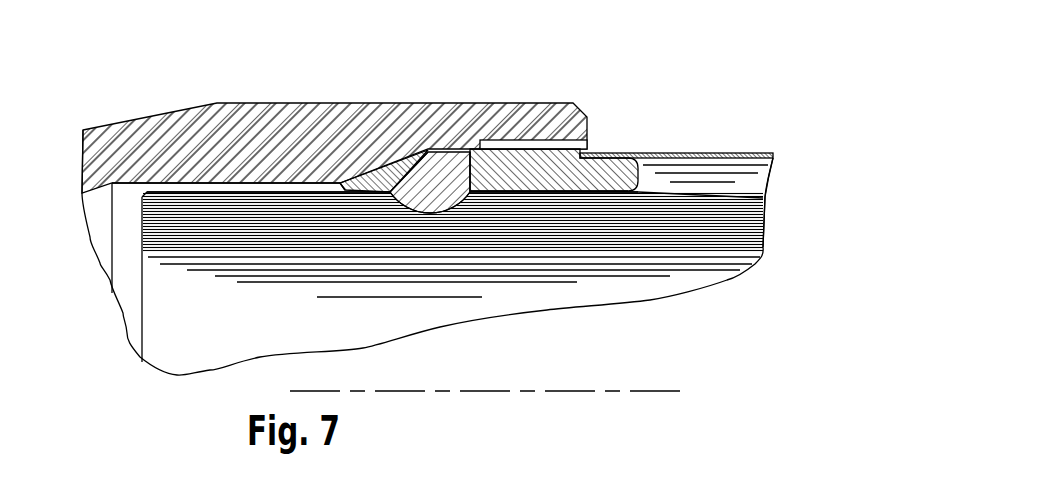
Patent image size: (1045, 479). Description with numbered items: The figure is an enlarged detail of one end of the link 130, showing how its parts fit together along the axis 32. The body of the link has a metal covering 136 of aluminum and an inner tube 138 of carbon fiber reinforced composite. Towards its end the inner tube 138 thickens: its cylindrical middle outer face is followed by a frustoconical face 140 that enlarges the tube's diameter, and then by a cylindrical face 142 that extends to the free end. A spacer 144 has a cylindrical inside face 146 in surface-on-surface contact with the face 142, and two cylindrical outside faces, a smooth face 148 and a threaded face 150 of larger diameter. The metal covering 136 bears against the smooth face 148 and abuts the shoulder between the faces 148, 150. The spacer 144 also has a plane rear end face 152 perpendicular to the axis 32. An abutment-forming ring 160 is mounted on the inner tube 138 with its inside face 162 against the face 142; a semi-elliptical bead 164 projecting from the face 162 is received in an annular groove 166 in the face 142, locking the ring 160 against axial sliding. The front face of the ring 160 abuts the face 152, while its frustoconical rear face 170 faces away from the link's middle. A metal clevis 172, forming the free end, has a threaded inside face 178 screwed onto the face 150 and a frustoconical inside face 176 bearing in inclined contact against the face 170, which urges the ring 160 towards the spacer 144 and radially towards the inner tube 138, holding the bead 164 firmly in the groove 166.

The link 130 is at (601, 58).
The metal clevis 172 is at (149, 148).
The cylindrical face 142 is at (266, 185).
The threaded cylindrical outside face 150 is at (493, 143).
The inner tube 138 is at (740, 238).
The inside face of the ring 162 is at (358, 198).
The cylindrical inside face of the spacer 146 is at (597, 198).
The rear face of the ring 170 is at (380, 165).
The frustoconical inside face of the clevis 176 is at (383, 188).
The abutment-forming ring 160 is at (444, 158).
The annular groove 166 is at (414, 188).
The rear end face of the spacer 152 is at (420, 196).
The bead 164 is at (464, 212).
The spacer 144 is at (522, 157).
The threaded inside face of the clevis 178 is at (541, 193).
The smooth cylindrical outside face 148 is at (611, 152).
The frustoconical face 140 is at (700, 183).
The metal covering 136 is at (739, 153).
The axis 32 is at (585, 391).